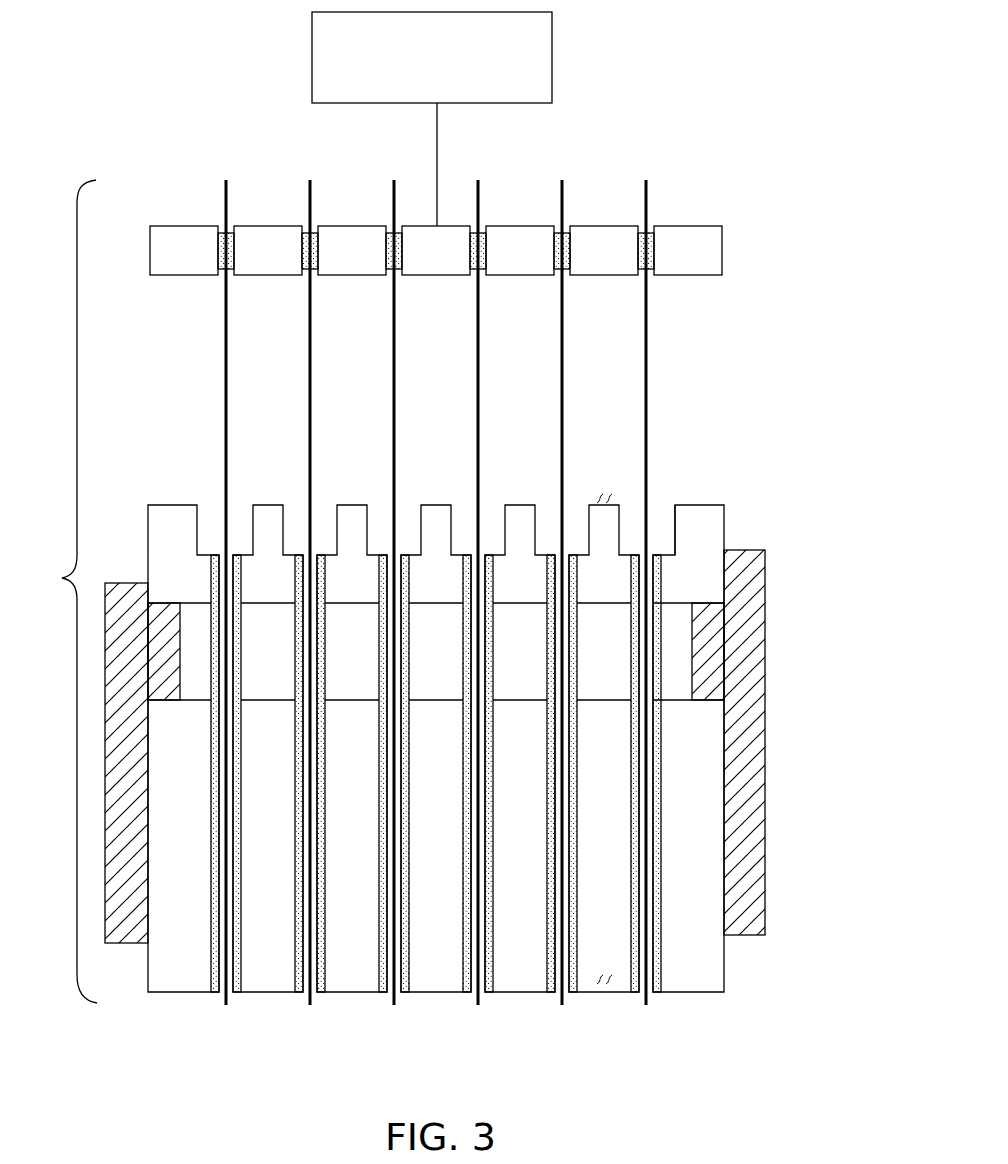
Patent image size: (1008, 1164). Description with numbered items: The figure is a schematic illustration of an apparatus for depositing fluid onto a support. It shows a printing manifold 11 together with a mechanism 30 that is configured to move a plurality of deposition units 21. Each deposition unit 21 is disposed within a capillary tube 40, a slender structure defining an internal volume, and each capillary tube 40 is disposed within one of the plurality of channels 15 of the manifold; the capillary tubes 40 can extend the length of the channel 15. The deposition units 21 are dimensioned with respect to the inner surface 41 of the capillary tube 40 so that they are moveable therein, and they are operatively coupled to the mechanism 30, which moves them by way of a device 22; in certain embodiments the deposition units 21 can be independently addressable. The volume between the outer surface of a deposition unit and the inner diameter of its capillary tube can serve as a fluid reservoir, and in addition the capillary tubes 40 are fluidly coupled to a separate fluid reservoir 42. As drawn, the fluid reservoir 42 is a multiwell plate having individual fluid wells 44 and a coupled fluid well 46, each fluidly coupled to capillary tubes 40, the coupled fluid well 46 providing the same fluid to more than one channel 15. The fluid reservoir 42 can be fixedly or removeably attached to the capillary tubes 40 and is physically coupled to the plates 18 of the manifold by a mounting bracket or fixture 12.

The printing manifold 11 is at (63, 591).
The mounting bracket or fixture 12 is at (471, 746).
The channel 15 is at (700, 640).
The plate 18 is at (724, 800).
The deposition unit 21 is at (225, 350).
The device 22 is at (722, 242).
The mechanism 30 is at (552, 65).
The capillary tube 40 is at (183, 720).
The inner surface 41 is at (211, 658).
The fluid reservoir 42 is at (723, 722).
The individual fluid well 44 is at (674, 525).
The coupled fluid well 46 is at (511, 555).